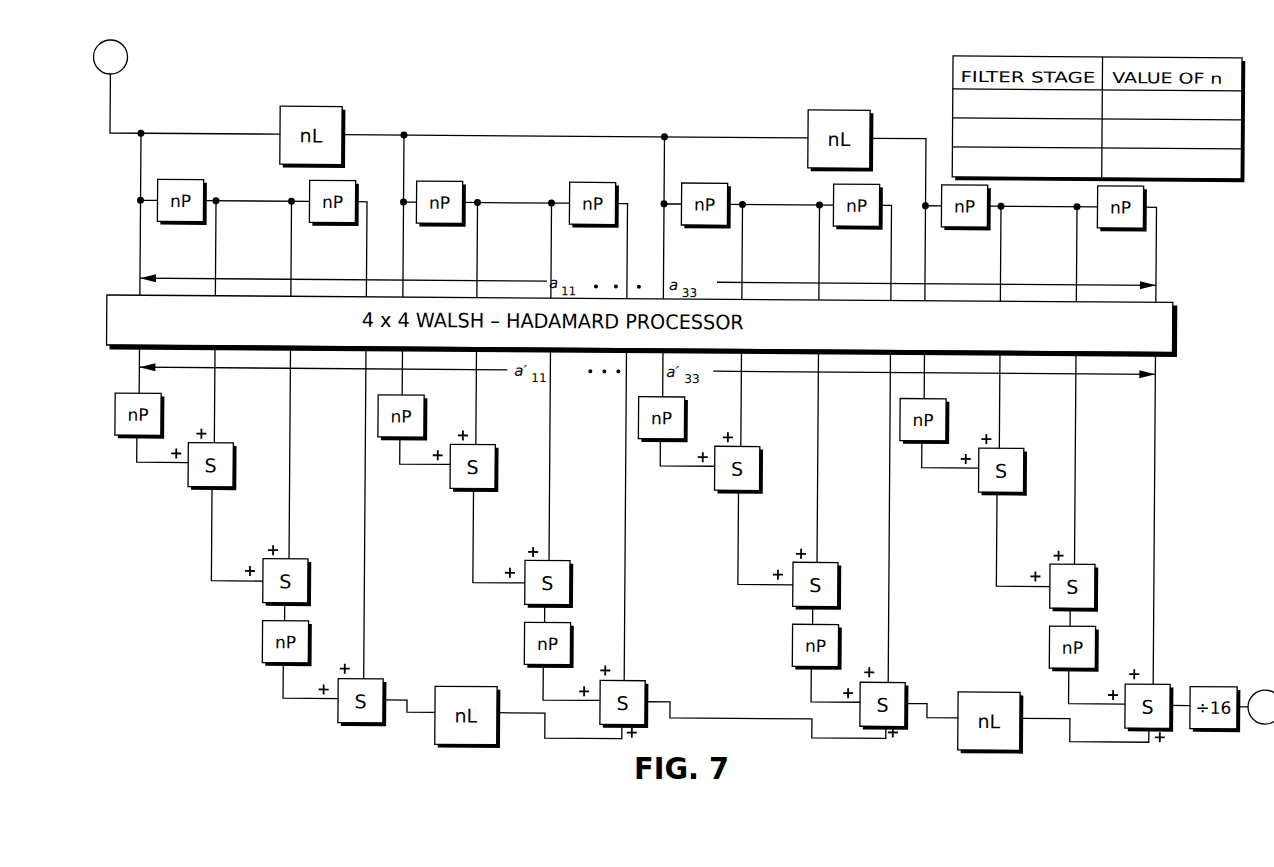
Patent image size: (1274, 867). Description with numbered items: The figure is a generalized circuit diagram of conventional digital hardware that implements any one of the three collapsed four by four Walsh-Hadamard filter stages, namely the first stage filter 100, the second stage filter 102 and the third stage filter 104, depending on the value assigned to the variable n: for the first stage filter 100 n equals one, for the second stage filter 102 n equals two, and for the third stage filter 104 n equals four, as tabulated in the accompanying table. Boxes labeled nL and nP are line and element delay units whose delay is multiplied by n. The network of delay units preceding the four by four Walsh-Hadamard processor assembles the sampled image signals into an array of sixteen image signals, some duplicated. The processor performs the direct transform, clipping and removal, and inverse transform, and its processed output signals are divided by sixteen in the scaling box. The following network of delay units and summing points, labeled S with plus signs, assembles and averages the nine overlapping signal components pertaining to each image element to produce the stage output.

The first stage collapsed 4 by 4 Walsh-Hadamard filter 100 is at (1097, 108).
The second stage collapsed 4 by 4 Walsh-Hadamard filter 102 is at (1096, 137).
The third stage collapsed 4 by 4 Walsh-Hadamard filter 104 is at (1064, 163).